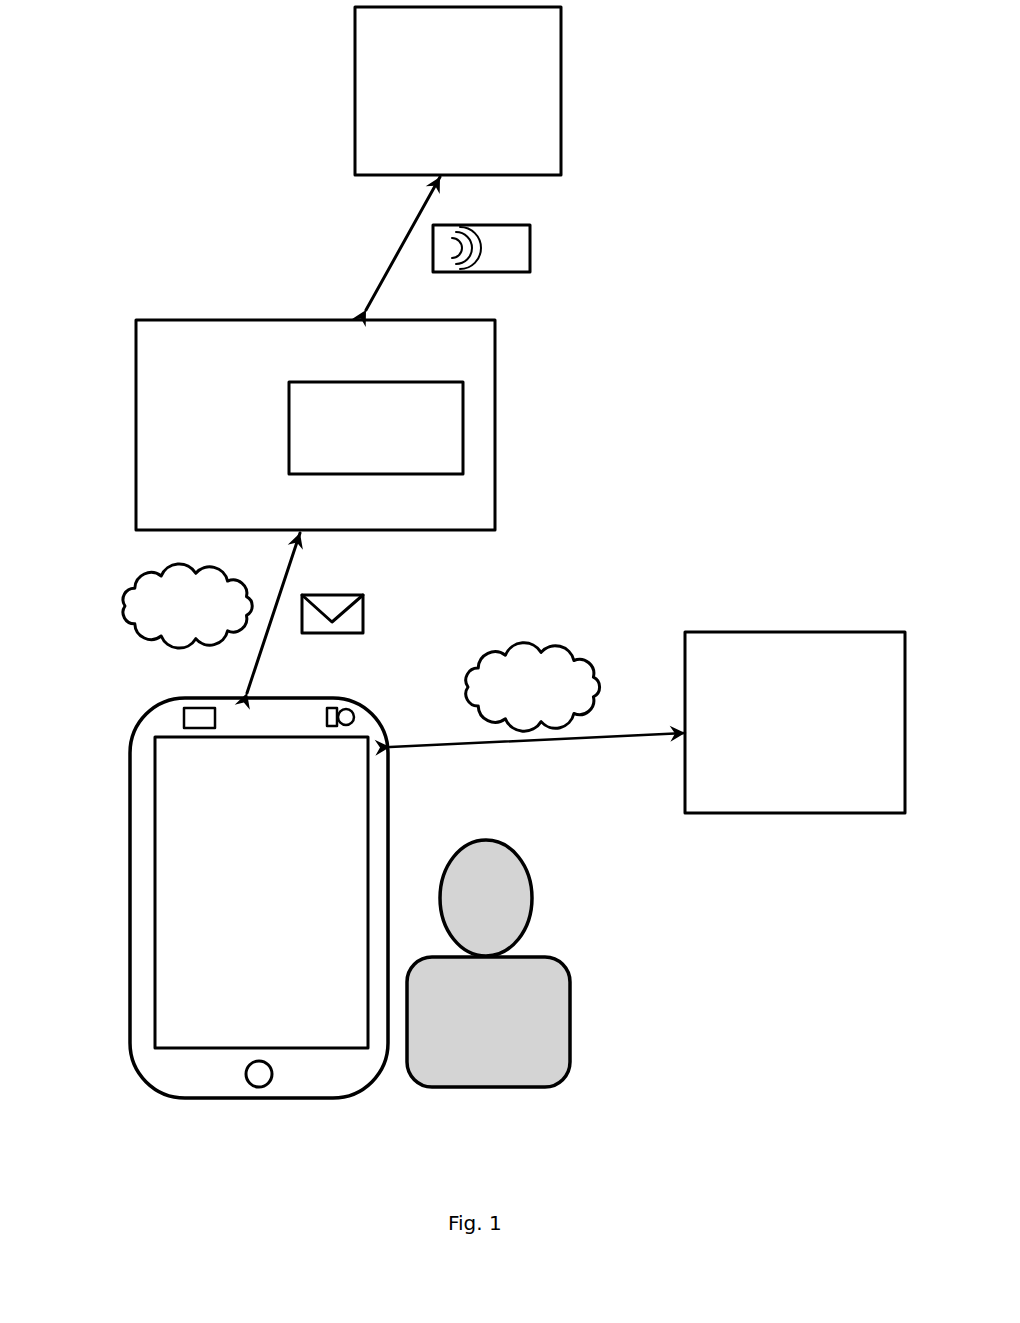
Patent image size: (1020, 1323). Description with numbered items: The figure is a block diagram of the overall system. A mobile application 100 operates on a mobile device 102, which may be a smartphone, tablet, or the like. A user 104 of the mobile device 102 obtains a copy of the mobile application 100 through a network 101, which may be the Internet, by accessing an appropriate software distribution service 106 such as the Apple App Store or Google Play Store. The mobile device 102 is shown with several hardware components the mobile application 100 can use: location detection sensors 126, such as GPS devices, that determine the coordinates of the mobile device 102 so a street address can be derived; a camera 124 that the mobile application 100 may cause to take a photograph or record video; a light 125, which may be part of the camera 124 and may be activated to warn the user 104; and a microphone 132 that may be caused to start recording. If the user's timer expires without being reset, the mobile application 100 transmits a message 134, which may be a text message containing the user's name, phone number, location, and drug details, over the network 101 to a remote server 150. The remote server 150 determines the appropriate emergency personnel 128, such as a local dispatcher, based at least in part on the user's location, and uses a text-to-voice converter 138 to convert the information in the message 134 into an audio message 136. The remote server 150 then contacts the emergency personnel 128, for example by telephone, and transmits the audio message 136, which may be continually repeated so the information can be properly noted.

The mobile application 100 is at (274, 898).
The network 101 is at (361, 647).
The mobile device 102 is at (322, 1070).
The user 104 is at (545, 1028).
The software distribution service 106 is at (795, 722).
The camera 124 is at (351, 709).
The light 125 is at (327, 709).
The location detection sensors 126 is at (197, 718).
The emergency personnel 128 is at (458, 91).
The microphone 132 is at (259, 1078).
The message 134 is at (357, 616).
The audio message 136 is at (512, 254).
The text-to-voice converter 138 is at (376, 428).
The remote server 150 is at (315, 425).